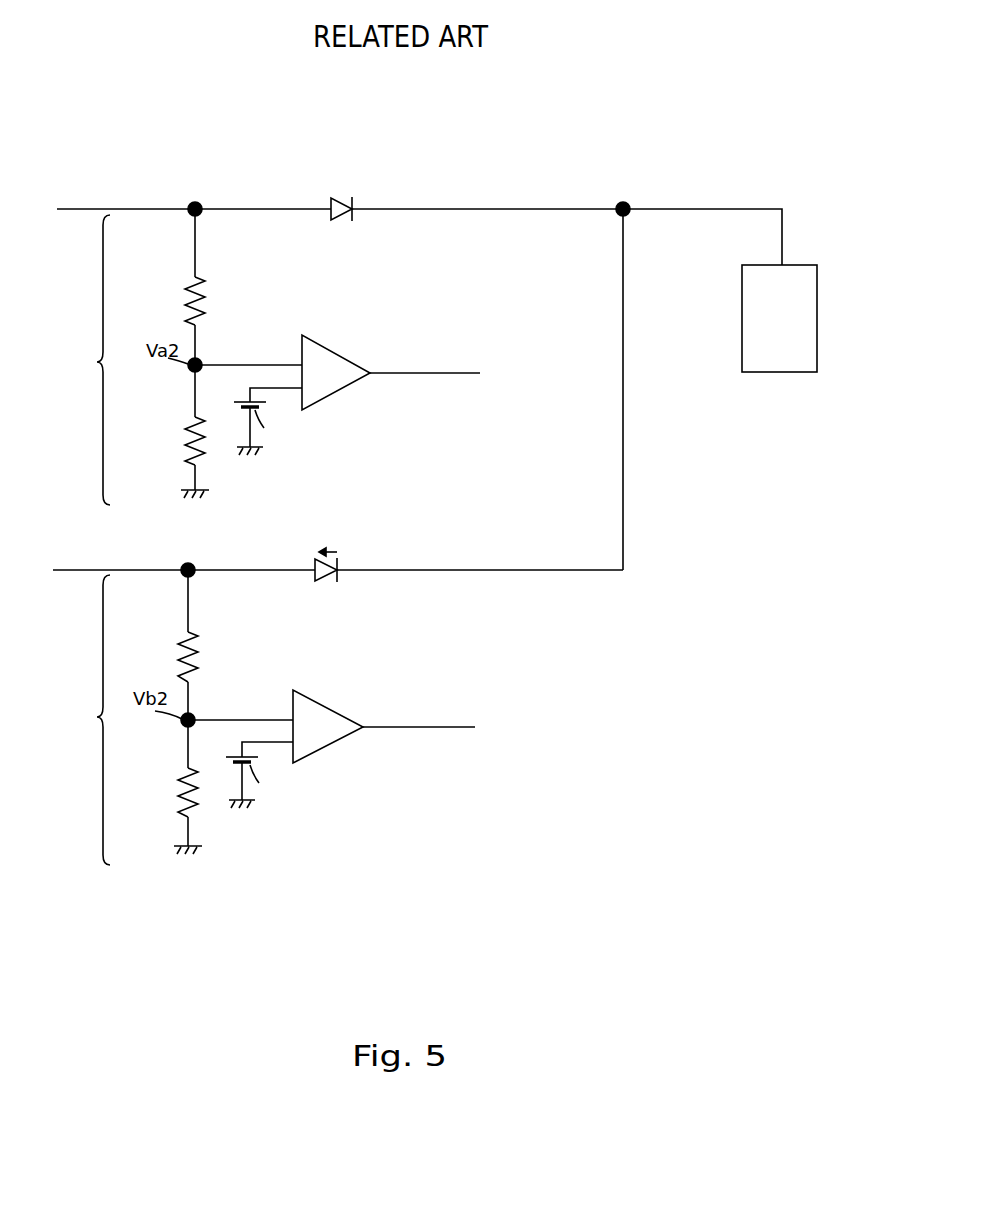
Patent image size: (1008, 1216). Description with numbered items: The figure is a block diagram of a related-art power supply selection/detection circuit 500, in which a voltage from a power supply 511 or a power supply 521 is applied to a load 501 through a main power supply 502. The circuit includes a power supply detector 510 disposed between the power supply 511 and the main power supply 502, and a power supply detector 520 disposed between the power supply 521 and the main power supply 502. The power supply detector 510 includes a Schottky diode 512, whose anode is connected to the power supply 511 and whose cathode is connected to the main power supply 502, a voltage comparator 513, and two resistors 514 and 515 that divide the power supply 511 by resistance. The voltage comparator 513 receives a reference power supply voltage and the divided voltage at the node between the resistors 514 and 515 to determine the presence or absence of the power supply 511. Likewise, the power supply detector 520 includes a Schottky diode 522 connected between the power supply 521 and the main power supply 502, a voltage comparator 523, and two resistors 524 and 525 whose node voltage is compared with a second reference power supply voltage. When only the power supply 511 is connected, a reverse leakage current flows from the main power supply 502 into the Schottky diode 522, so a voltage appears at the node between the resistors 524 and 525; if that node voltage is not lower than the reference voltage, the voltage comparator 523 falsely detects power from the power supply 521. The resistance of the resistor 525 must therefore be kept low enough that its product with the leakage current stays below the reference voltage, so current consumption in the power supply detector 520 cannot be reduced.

The power supply selection/detection circuit 500 is at (741, 183).
The load 501 is at (777, 372).
The main power supply 502 is at (658, 211).
The power supply detector 510 is at (82, 360).
The power supply 511 is at (80, 208).
The Schottky diode 512 is at (330, 203).
The voltage comparator 513 is at (320, 398).
The resistor 514 is at (185, 303).
The resistor 515 is at (183, 437).
The power supply detector 520 is at (82, 720).
The power supply 521 is at (76, 570).
The Schottky diode 522 is at (314, 565).
The voltage comparator 523 is at (318, 752).
The resistor 524 is at (177, 656).
The resistor 525 is at (177, 792).